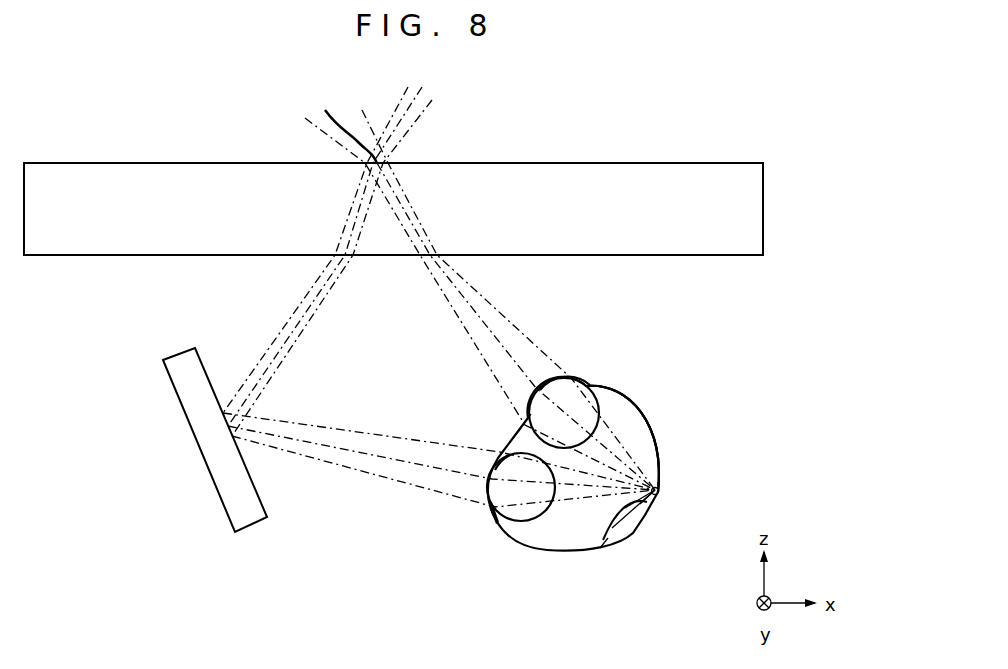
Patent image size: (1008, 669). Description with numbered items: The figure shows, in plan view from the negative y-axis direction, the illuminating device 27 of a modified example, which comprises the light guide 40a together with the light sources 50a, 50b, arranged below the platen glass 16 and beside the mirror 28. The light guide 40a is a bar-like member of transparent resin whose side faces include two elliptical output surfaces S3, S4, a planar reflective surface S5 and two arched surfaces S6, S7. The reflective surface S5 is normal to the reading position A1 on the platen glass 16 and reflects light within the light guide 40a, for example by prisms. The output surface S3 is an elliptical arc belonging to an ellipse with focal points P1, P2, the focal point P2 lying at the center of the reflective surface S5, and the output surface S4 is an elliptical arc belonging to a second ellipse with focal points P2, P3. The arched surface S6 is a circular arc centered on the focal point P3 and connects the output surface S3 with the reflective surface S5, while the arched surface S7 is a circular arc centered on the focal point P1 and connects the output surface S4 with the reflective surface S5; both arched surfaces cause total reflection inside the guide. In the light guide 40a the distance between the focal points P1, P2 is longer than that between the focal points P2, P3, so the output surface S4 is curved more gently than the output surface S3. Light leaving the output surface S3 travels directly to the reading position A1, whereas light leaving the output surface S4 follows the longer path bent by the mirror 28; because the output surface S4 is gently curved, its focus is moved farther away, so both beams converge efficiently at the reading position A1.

The platen glass 16 is at (615, 163).
The mirror 28 is at (200, 448).
The illuminating device 27 is at (646, 411).
The light guide 40a is at (650, 437).
The light source 50a is at (498, 522).
The light source 50b is at (596, 396).
The reading position A1 is at (343, 124).
The output surface S3 is at (582, 378).
The output surface S4 is at (492, 475).
The reflective surface S5 is at (658, 493).
The arched surface S6 is at (655, 448).
The arched surface S7 is at (615, 543).
The focal point P1 is at (527, 420).
The focal point P2 is at (603, 540).
The focal point P3 is at (488, 490).